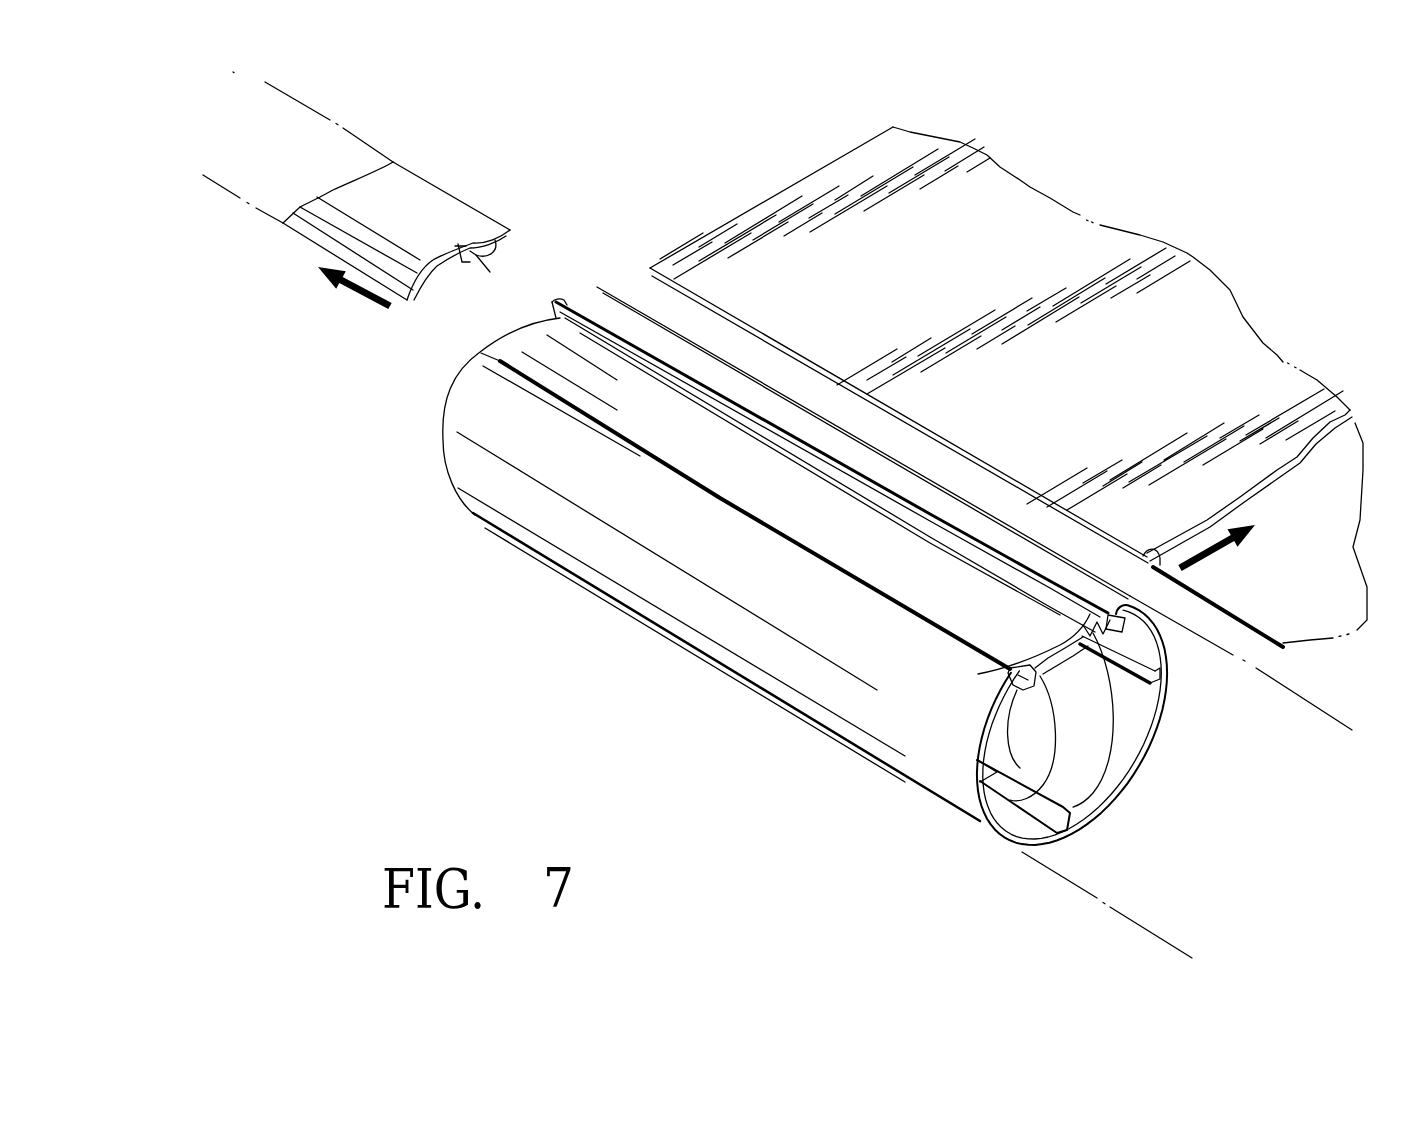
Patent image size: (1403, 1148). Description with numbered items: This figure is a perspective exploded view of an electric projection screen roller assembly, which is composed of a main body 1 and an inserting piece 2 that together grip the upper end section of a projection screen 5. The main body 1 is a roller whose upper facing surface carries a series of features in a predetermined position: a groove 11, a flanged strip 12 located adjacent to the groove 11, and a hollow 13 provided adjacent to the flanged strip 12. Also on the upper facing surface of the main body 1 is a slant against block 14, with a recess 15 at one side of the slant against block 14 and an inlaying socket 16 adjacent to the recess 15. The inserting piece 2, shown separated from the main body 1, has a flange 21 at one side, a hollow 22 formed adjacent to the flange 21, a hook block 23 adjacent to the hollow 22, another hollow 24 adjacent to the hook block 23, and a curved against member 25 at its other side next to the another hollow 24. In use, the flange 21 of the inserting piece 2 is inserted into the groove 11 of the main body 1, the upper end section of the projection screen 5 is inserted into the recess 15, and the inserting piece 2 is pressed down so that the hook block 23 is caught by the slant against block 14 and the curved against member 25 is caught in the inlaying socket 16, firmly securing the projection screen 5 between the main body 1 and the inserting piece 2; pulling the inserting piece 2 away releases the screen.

The main body 1 is at (627, 600).
The inserting piece 2 is at (424, 178).
The projection screen 5 is at (783, 188).
The groove 11 is at (980, 823).
The flanged strip 12 is at (1037, 676).
The hollow 13 is at (1003, 847).
The slant against block 14 is at (1070, 588).
The recess 15 is at (1105, 672).
The inlaying socket 16 is at (1157, 640).
The flange 21 is at (407, 300).
The hollow 22 is at (437, 267).
The hook block 23 is at (482, 271).
The another hollow 24 is at (473, 240).
The curved against member 25 is at (513, 240).